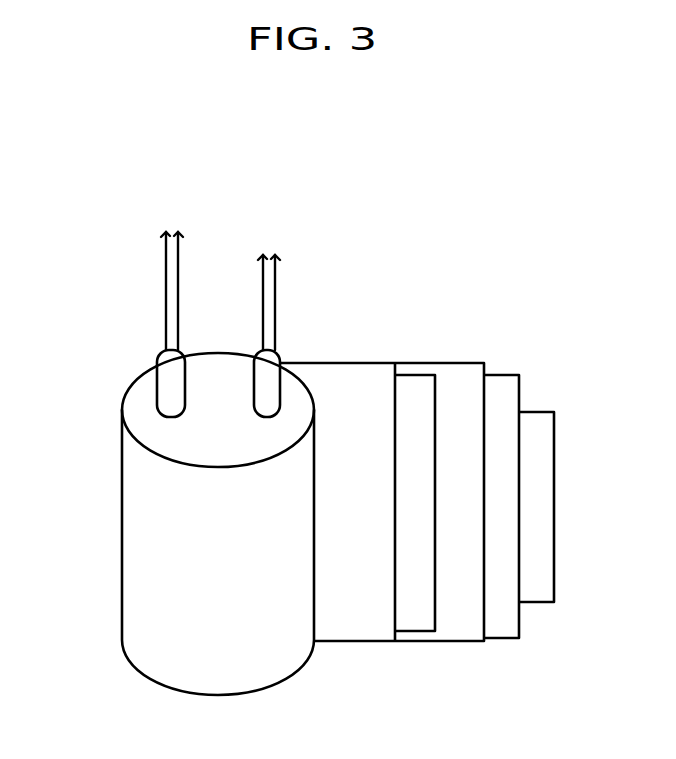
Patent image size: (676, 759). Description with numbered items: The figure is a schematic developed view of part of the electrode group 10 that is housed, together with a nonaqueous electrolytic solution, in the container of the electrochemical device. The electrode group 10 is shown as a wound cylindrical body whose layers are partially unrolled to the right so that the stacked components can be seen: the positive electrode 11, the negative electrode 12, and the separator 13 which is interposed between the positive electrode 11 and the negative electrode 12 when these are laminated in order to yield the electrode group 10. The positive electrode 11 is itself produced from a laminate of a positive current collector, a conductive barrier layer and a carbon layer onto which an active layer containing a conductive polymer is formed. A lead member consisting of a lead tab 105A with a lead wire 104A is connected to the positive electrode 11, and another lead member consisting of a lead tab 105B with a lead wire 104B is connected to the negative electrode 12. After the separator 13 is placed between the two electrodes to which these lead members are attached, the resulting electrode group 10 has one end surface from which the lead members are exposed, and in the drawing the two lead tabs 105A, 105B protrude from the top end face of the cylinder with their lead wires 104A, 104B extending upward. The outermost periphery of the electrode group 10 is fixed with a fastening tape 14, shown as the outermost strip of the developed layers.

The electrode group 10 is at (445, 240).
The positive electrode 11 is at (413, 617).
The negative electrode 12 is at (498, 628).
The separator 13 is at (353, 623).
The fastening tape 14 is at (533, 590).
The lead wire 104A is at (176, 269).
The lead wire 104B is at (270, 267).
The lead tab 105A is at (170, 365).
The lead tab 105B is at (270, 365).